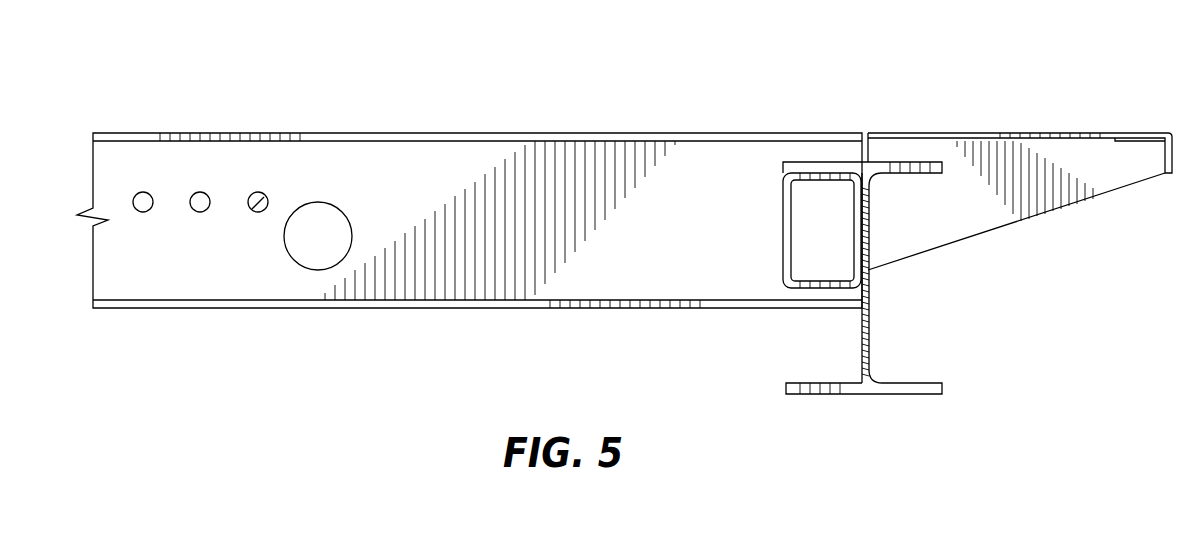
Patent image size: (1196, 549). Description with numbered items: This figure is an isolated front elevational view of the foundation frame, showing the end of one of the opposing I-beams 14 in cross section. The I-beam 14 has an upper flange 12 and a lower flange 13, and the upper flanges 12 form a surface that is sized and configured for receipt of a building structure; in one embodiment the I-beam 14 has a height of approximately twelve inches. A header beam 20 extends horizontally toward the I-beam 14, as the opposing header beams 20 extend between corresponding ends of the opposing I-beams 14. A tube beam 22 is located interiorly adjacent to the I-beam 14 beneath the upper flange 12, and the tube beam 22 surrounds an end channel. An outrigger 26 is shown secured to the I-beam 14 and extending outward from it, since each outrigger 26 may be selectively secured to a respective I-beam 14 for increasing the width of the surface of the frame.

The upper flange 12 is at (863, 159).
The lower flange 13 is at (820, 395).
The I-beam 14 is at (859, 274).
The header beam 20 is at (441, 311).
The tube beam 22 is at (855, 246).
The outrigger 26 is at (1138, 133).